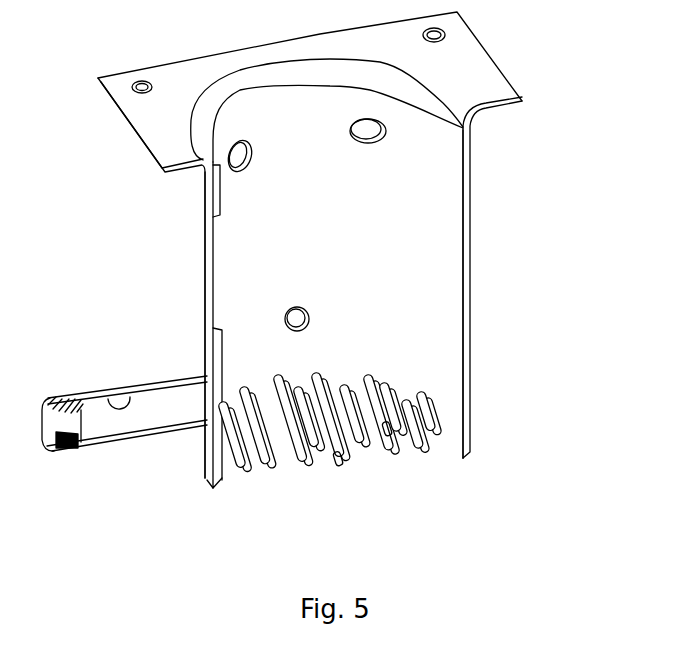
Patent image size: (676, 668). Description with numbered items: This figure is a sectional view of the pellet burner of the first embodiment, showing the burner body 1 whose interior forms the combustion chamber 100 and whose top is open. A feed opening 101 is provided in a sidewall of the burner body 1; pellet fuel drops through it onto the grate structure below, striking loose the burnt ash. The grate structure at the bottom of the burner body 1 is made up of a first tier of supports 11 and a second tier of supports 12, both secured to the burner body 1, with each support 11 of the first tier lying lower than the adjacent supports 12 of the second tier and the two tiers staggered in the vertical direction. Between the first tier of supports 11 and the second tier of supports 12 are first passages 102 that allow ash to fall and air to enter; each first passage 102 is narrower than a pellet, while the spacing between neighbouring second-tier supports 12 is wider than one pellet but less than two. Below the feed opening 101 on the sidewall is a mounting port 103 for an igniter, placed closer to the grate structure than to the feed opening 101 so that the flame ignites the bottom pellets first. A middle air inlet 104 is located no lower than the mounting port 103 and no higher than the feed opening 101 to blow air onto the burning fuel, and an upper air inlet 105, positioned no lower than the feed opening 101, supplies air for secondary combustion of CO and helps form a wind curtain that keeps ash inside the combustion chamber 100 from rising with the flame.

The burner body 1 is at (468, 345).
The combustion chamber 100 is at (365, 262).
The feed opening 101 is at (205, 272).
The first passage 102 is at (383, 427).
The mounting port 103 is at (215, 402).
The middle air inlet 104 is at (286, 322).
The upper air inlet 105 is at (244, 152).
The first tier of supports 11 is at (302, 460).
The second tier of supports 12 is at (333, 458).